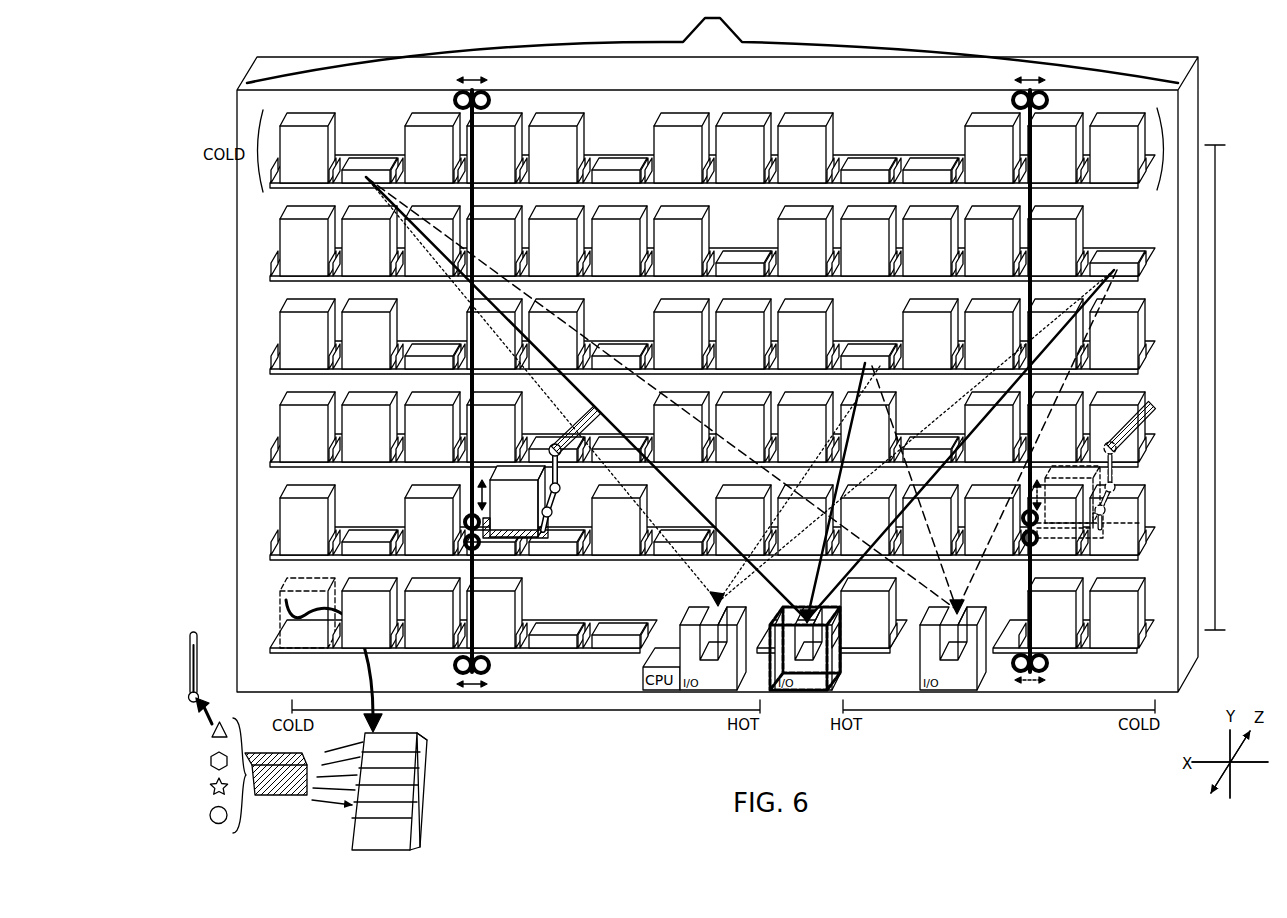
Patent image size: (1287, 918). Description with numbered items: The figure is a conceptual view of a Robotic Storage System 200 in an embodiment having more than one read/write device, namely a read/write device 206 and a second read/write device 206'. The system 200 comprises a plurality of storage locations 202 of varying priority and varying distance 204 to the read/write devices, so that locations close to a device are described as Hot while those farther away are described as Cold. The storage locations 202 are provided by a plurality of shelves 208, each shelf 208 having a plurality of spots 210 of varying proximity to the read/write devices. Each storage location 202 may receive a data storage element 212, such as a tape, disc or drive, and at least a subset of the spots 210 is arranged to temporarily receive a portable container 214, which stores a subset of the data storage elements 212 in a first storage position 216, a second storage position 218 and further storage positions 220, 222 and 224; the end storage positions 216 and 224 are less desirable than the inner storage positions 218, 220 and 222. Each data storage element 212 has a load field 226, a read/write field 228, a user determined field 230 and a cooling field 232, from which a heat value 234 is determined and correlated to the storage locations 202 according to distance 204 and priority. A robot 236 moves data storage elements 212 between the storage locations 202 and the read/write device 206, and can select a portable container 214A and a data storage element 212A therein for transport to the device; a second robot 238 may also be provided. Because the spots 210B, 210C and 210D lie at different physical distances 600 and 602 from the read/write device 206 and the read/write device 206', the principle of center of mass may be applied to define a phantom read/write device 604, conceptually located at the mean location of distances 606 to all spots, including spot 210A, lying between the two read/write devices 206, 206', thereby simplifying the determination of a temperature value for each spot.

The Robotic Storage System 200 is at (622, 66).
The storage locations 202 is at (712, 41).
The varying distance 204 is at (1180, 280).
The data read/write device 206 is at (713, 682).
The read/write device 206' is at (953, 682).
The shelf 208 is at (871, 162).
The spot 210 is at (933, 179).
The spot 210A is at (677, 527).
The spot 210B is at (365, 156).
The spot 210C is at (864, 343).
The spot 210D is at (1113, 251).
The data storage element 212 is at (288, 786).
The data storage element 212A is at (566, 420).
The portable container 214 is at (296, 614).
The portable container 214A is at (533, 521).
The first storage position 216 is at (418, 810).
The second storage position 218 is at (420, 790).
The storage position 220 is at (421, 773).
The storage position 222 is at (424, 757).
The storage position 224 is at (424, 738).
The load field 226 is at (202, 731).
The read/write field 228 is at (202, 760).
The user determined field 230 is at (203, 787).
The cooling field 232 is at (202, 816).
The heat value 234 is at (196, 667).
The robot 236 is at (473, 78).
The second robot 238 is at (1030, 78).
The physical distance 600 is at (703, 584).
The physical distance 602 is at (963, 596).
The phantom read/write device 604 is at (800, 668).
The mean location of distances 606 is at (777, 587).